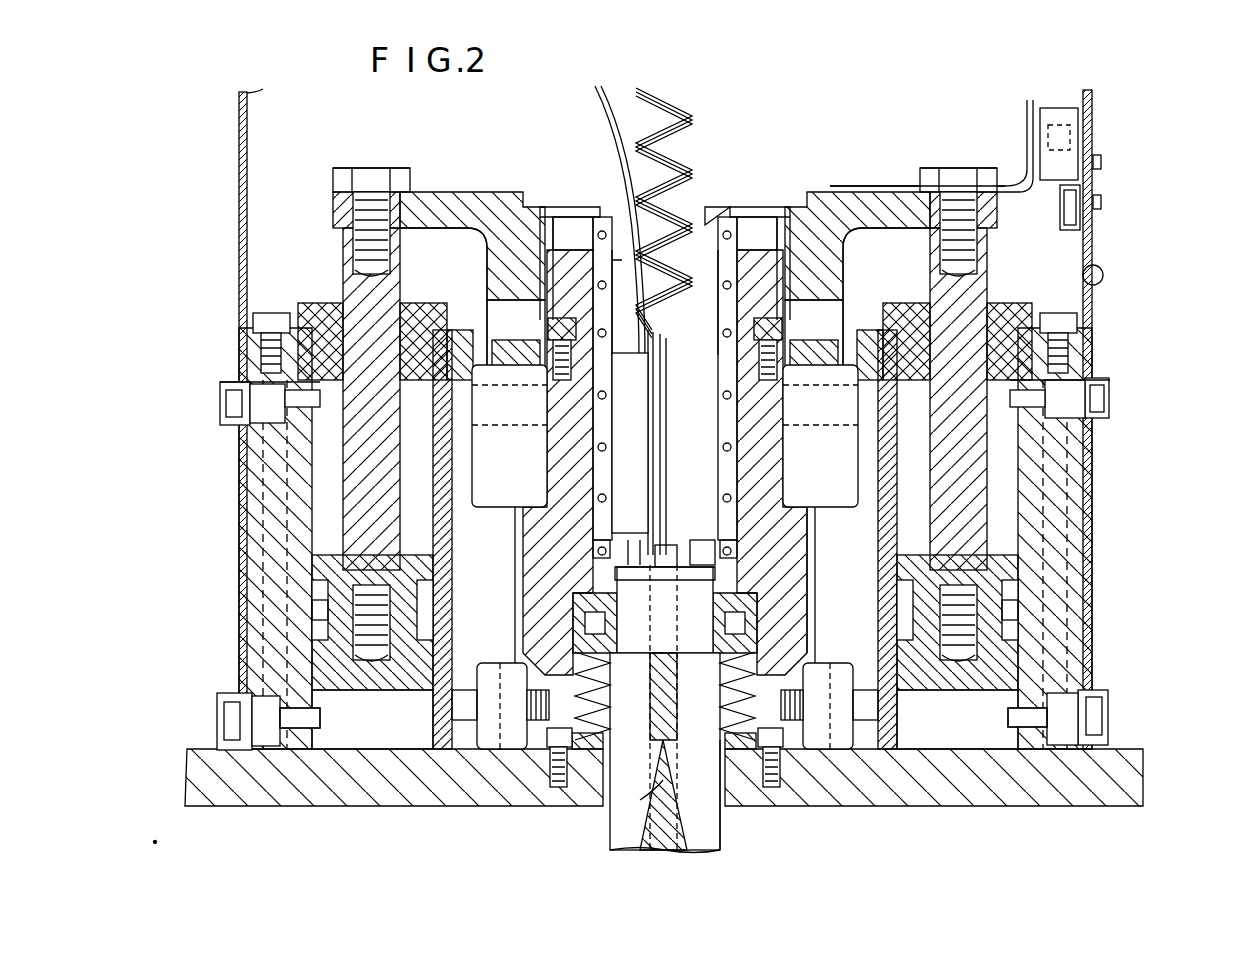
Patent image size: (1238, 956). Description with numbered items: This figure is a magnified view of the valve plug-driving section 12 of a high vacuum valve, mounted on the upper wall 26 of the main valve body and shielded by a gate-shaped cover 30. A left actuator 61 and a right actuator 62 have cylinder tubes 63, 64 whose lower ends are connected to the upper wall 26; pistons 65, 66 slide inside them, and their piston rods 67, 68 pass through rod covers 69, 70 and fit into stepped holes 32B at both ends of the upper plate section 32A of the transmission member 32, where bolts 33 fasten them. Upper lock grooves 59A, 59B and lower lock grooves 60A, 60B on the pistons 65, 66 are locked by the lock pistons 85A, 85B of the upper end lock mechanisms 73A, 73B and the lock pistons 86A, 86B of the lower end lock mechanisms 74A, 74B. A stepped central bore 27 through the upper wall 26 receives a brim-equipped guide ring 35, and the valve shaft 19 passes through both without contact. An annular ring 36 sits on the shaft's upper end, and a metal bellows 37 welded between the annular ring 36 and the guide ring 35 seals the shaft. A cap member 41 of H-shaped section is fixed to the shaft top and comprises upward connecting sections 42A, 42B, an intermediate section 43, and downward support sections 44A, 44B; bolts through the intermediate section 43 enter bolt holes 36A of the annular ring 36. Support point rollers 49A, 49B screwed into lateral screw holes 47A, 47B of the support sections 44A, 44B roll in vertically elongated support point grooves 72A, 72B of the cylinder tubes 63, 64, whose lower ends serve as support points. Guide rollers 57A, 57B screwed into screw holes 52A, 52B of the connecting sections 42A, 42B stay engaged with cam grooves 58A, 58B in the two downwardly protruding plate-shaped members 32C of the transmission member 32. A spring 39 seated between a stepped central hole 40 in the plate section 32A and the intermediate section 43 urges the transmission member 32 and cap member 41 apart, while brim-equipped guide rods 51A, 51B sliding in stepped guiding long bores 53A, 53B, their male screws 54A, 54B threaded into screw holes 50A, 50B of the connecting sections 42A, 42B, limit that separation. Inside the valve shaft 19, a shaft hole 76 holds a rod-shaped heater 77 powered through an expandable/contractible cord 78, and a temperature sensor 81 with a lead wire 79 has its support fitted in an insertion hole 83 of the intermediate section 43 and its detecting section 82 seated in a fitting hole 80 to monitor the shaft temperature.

The valve plug-driving section 12 is at (1105, 122).
The valve shaft 19 is at (628, 792).
The upper wall 26 is at (1070, 794).
The stepped central bore 27 is at (722, 808).
The cover 30 is at (239, 143).
The transmission member 32 is at (845, 190).
The upper plate section 32A is at (470, 198).
The stepped holes 32B is at (368, 205).
The plate-shaped members 32C is at (488, 253).
The bolts 33 is at (403, 172).
The brim-equipped guide ring 35 is at (578, 808).
The annular ring 36 is at (728, 593).
The bolt holes 36A is at (780, 610).
The bellows 37 is at (600, 720).
The spring 39 is at (728, 445).
The stepped central hole 40 is at (712, 215).
The cap member 41 is at (800, 500).
The connecting section 42A is at (545, 472).
The connecting section 42B is at (748, 466).
The intermediate section 43 is at (703, 545).
The support section 44A is at (552, 760).
The support section 44B is at (780, 760).
The screw hole 47A is at (545, 722).
The screw hole 47B is at (790, 722).
The support point roller 49A is at (487, 665).
The support point roller 49B is at (840, 666).
The screw hole 50A is at (562, 345).
The screw hole 50B is at (758, 345).
The brim-equipped guide rod 51A is at (577, 225).
The brim-equipped guide rod 51B is at (768, 225).
The screw hole 52A is at (545, 378).
The screw hole 52B is at (738, 385).
The stepped guiding long bore 53A is at (546, 212).
The stepped guiding long bore 53B is at (748, 215).
The male screw 54A is at (602, 362).
The male screw 54B is at (725, 362).
The guide roller 57A is at (502, 433).
The guide roller 57B is at (805, 433).
The cam groove 58A is at (492, 316).
The cam groove 58B is at (840, 320).
The upper lock groove 59A is at (318, 590).
The upper lock groove 59B is at (1012, 588).
The lower lock groove 60A is at (338, 662).
The lower lock groove 60B is at (1000, 662).
The actuator 61 is at (322, 492).
The actuator 62 is at (1002, 476).
The cylinder tube 63 is at (443, 556).
The cylinder tube 64 is at (885, 522).
The piston 65 is at (372, 719).
The piston 66 is at (925, 690).
The piston rod 67 is at (348, 300).
The piston rod 68 is at (985, 292).
The rod cover 69 is at (310, 312).
The rod cover 70 is at (1008, 310).
The support point groove 72A is at (488, 628).
The support point groove 72B is at (844, 628).
The upper end lock mechanism 73A is at (212, 370).
The upper end lock mechanism 73B is at (1103, 338).
The lower end lock mechanism 74A is at (217, 688).
The lower end lock mechanism 74B is at (1113, 688).
The shaft hole 76 is at (690, 688).
The heater 77 is at (665, 815).
The expandable/contractible cord 78 is at (677, 154).
The lead wire 79 is at (598, 100).
The fitting hole 80 is at (625, 670).
The temperature sensor 81 is at (625, 437).
The detecting section 82 is at (630, 555).
The insertion hole 83 is at (664, 545).
The lock piston 85A is at (265, 432).
The lock piston 85B is at (1040, 434).
The lock piston 86A is at (322, 716).
The lock piston 86B is at (1012, 747).